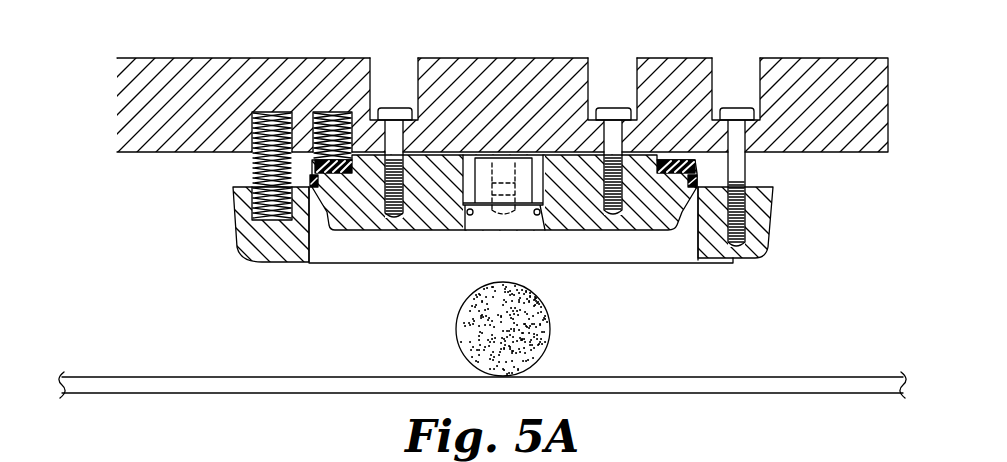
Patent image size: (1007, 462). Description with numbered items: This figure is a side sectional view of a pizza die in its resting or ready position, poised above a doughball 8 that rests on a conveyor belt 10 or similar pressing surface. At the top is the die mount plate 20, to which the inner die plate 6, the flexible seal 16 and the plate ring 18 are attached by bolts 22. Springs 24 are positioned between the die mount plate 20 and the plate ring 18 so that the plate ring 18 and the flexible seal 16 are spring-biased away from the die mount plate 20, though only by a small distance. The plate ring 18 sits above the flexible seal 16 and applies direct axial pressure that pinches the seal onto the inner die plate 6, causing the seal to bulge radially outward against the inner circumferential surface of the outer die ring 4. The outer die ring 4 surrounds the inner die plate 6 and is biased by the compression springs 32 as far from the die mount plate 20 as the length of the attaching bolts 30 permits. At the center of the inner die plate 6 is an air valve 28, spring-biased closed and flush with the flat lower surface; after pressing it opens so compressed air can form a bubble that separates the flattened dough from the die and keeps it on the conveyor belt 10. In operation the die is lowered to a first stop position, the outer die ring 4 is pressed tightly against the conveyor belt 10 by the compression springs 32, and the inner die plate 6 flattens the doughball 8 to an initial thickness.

The outer die ring 4 is at (770, 247).
The inner die plate 6 is at (358, 233).
The doughball 8 is at (550, 338).
The conveyor belt 10 is at (770, 383).
The flexible seal 16 is at (698, 180).
The plate ring 18 is at (695, 163).
The die mount plate 20 is at (533, 72).
The bolts 22 is at (397, 107).
The springs 24 is at (333, 120).
The air valve 28 is at (527, 225).
The attaching bolts 30 is at (731, 107).
The compression springs 32 is at (257, 162).